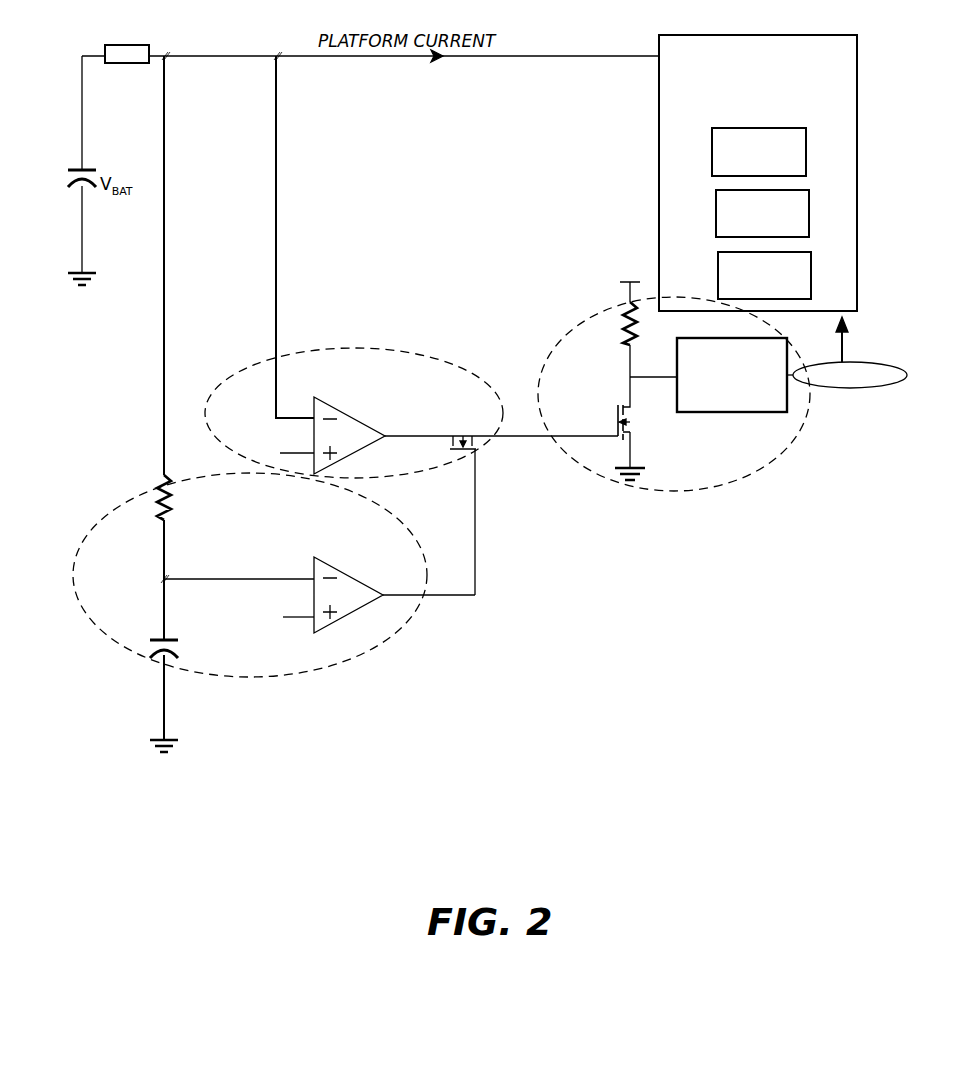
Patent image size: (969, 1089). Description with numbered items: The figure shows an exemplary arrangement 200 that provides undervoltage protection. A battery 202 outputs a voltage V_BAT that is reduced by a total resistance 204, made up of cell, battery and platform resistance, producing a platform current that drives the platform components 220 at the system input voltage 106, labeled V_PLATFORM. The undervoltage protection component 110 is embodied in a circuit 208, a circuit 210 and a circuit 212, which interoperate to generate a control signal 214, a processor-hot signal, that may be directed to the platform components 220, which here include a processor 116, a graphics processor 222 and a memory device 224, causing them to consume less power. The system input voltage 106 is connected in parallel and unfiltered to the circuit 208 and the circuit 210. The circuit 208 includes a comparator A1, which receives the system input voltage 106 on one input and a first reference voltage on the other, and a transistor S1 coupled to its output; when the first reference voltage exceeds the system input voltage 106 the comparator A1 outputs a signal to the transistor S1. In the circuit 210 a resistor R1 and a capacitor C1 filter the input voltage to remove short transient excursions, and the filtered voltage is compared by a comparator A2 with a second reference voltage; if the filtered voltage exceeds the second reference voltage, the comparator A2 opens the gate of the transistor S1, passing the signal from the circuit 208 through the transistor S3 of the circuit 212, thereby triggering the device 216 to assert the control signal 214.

The arrangement 200 is at (528, 752).
The undervoltage protection component 110 is at (663, 651).
The battery 202 is at (84, 169).
The total resistance 204 is at (137, 58).
The system input voltage 106 is at (165, 170).
The circuit 208 is at (354, 377).
The comparator A1 is at (333, 403).
The transistor S1 is at (464, 434).
The circuit 210 is at (274, 594).
The resistor R1 is at (164, 485).
The capacitor C1 is at (164, 637).
The comparator A2 is at (330, 620).
The circuit 212 is at (674, 408).
The transistor S3 is at (628, 422).
The device 216 is at (707, 408).
The control signal 214 is at (871, 388).
The platform components 220 is at (758, 173).
The processor 116 is at (759, 152).
The graphics processor 222 is at (762, 213).
The memory device 224 is at (764, 275).